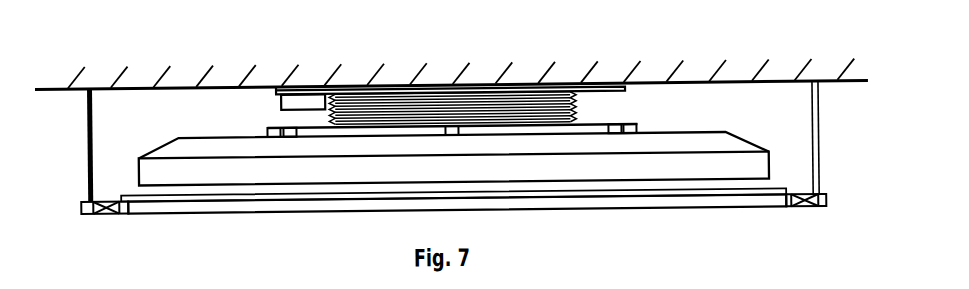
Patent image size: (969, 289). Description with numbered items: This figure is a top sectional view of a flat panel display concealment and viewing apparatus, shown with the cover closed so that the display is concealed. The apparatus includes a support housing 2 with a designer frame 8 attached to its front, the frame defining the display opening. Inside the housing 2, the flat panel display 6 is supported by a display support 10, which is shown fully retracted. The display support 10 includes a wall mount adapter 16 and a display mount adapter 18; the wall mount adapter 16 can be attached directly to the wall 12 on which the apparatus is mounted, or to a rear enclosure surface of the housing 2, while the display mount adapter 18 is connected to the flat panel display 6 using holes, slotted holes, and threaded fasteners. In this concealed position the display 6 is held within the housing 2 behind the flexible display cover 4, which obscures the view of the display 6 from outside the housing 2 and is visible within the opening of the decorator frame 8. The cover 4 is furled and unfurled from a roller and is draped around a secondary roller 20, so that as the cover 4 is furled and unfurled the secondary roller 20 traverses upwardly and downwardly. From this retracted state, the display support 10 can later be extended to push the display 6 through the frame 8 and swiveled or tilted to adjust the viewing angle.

The support housing 2 is at (87, 139).
The flexible display cover 4 is at (333, 202).
The flat panel display 6 is at (152, 151).
The designer frame 8 is at (105, 214).
The display support 10 is at (576, 105).
The wall 12 is at (777, 89).
The wall mount adapter 16 is at (627, 91).
The display mount adapter 18 is at (267, 135).
The secondary roller 20 is at (280, 110).